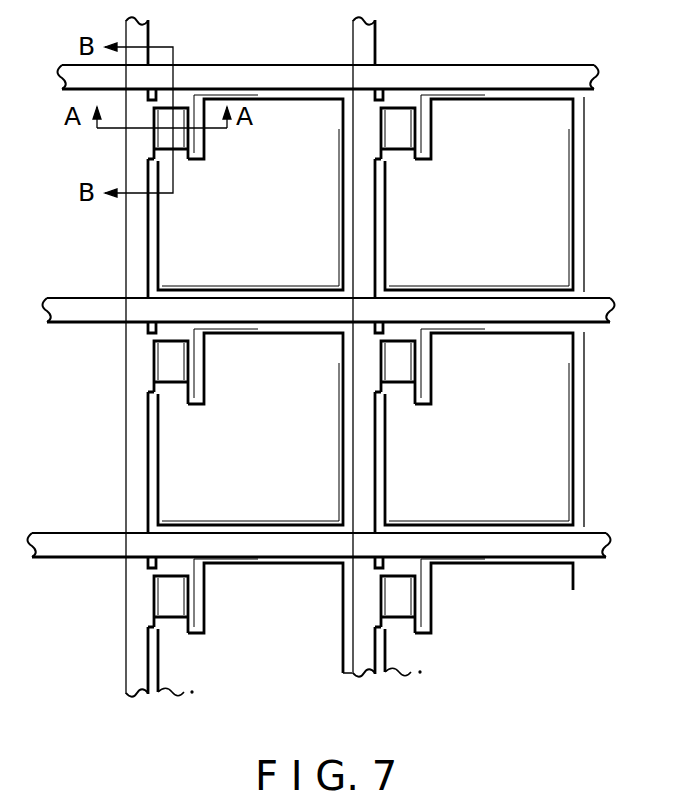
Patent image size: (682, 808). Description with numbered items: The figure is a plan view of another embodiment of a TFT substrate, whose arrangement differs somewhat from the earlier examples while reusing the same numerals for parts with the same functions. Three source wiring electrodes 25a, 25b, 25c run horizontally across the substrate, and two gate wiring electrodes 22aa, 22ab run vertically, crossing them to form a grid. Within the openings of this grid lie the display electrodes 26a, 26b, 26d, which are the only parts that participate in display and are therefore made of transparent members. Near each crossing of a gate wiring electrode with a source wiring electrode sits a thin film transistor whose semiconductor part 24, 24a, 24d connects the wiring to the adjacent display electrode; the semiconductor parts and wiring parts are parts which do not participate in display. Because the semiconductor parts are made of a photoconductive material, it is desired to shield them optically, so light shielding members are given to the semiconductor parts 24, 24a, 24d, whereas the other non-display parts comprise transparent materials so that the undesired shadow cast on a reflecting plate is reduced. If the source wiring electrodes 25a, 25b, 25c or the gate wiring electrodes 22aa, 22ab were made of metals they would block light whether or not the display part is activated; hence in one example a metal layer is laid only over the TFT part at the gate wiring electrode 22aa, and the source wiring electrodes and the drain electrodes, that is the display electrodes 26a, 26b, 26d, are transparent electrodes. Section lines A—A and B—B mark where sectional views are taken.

The gate wiring electrode 22aa is at (133, 668).
The gate wiring electrode 22ab is at (362, 666).
The semiconductor part 24 is at (163, 134).
The semiconductor part 24a is at (167, 367).
The semiconductor part 24d is at (398, 128).
The source wiring electrode 25a is at (229, 80).
The source wiring electrode 25b is at (601, 310).
The source wiring electrode 25c is at (601, 543).
The display electrode 26a is at (172, 458).
The display electrode 26b is at (294, 118).
The display electrode 26d is at (526, 118).